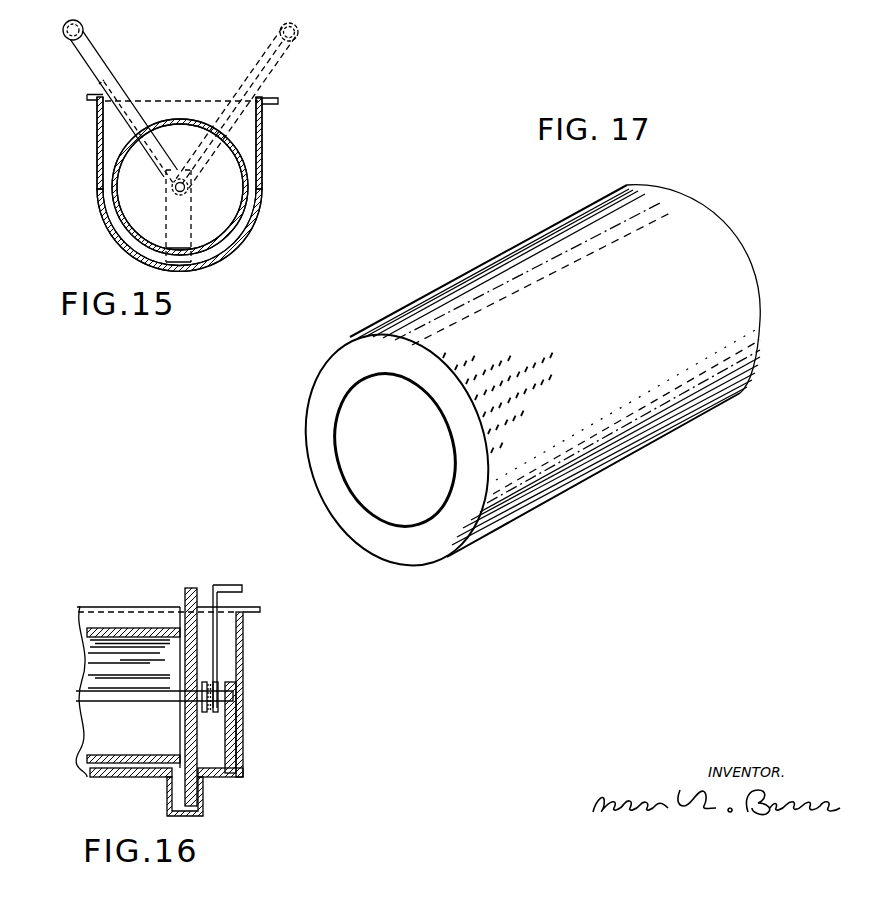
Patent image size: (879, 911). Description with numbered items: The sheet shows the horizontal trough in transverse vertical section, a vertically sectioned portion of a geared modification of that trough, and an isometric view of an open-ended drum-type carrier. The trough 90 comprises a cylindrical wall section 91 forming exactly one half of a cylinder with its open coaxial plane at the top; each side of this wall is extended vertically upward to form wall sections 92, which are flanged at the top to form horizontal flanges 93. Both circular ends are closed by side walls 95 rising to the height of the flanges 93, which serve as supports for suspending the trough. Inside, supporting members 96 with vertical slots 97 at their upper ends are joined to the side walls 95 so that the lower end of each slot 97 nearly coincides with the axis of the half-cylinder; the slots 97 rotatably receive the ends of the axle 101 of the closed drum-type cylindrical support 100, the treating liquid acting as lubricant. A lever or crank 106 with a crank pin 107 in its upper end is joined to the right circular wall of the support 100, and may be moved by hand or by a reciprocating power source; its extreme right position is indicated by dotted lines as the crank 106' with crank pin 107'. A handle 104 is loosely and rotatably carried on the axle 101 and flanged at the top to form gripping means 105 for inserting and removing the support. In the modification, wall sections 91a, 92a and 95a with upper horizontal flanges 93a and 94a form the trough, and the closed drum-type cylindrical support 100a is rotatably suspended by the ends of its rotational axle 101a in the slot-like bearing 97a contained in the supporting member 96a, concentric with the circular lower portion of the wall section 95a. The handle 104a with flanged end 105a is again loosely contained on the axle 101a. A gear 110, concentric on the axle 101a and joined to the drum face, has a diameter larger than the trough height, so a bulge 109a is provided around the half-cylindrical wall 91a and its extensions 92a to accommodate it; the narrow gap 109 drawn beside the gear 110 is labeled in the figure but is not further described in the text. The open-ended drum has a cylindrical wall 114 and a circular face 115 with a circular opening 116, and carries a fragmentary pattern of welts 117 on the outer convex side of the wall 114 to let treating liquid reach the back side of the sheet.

In FIG. 15, the trough 90 is at (98, 215).
In FIG. 15, the cylindrical wall section 91 is at (238, 232).
In FIG. 15, the wall sections 92 is at (100, 127).
In FIG. 15, the horizontal flanges 93 is at (92, 98).
In FIG. 15, the side walls 95 is at (112, 150).
In FIG. 15, the supporting members 96 is at (171, 213).
In FIG. 15, the vertical slots 97 is at (175, 187).
In FIG. 15, the cylindrical support 100 is at (248, 186).
In FIG. 15, the axle 101 is at (186, 190).
In FIG. 15, the handle 104 is at (116, 99).
In FIG. 15, the gripping means 105 is at (107, 69).
In FIG. 15, the lever or crank 106 is at (124, 104).
In FIG. 15, the crank pin 107 is at (95, 25).
In FIG. 15, the crank in extreme right position 106' is at (254, 107).
In FIG. 15, the crank pin in extreme right position 107' is at (313, 31).
In FIG. 16, the cylindrical wall section 91a is at (120, 777).
In FIG. 16, the wall sections 92a is at (90, 617).
In FIG. 16, the horizontal flanges 93a is at (91, 606).
In FIG. 16, the horizontal flanges 94a is at (258, 612).
In FIG. 16, the wall section 95a is at (243, 660).
In FIG. 16, the supporting member 96a is at (236, 724).
In FIG. 16, the slot-like bearing 97a is at (240, 707).
In FIG. 16, the cylindrical support 100a is at (128, 627).
In FIG. 16, the rotational axle 101a is at (236, 692).
In FIG. 16, the handle 104a is at (236, 607).
In FIG. 16, the flanged end 105a is at (215, 585).
In FIG. 16, the gap 109 is at (180, 612).
In FIG. 16, the bulge 109a is at (200, 789).
In FIG. 16, the gear 110 is at (185, 590).
In FIG. 17, the cylindrical wall 114 is at (686, 225).
In FIG. 17, the circular face 115 is at (368, 530).
In FIG. 17, the circular opening 116 is at (350, 460).
In FIG. 17, the pattern of welts 117 is at (512, 452).